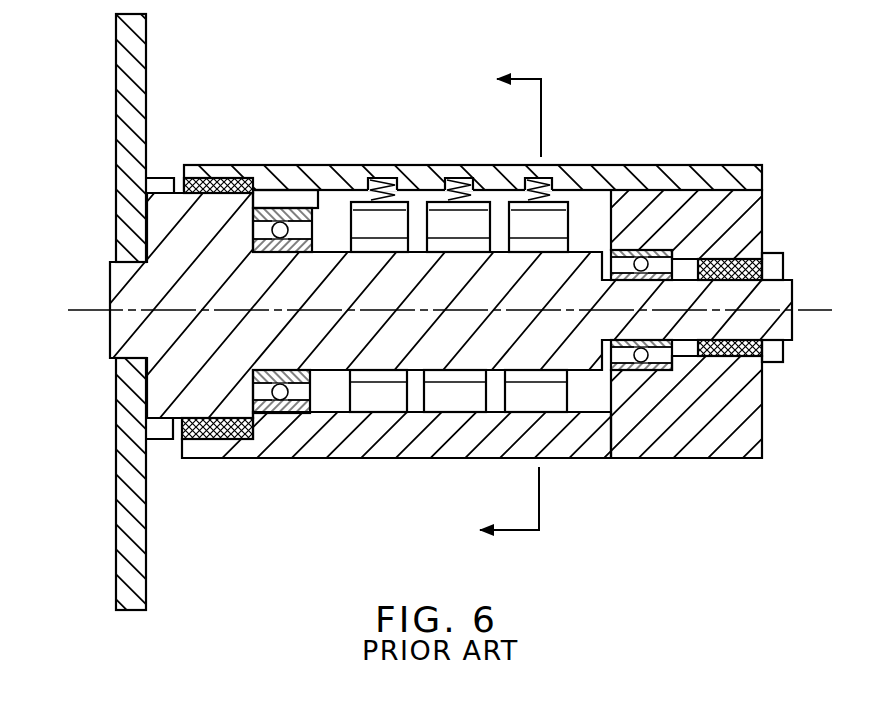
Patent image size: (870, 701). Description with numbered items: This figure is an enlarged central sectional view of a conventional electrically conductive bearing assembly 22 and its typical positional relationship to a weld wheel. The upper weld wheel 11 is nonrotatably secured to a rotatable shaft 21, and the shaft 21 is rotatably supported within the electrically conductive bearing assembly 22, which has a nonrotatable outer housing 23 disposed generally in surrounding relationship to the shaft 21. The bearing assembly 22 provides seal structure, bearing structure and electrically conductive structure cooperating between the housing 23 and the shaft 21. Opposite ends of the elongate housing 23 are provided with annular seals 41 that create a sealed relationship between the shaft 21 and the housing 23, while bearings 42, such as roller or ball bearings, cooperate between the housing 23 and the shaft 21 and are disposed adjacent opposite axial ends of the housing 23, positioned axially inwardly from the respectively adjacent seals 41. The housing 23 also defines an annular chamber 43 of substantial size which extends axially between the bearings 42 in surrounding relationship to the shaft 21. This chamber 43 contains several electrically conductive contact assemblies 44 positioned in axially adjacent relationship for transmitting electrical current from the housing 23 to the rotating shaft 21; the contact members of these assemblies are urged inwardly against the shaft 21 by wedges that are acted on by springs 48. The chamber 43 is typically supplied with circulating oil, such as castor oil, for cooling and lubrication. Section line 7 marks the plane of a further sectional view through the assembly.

The section line 7- 7 is at (522, 303).
The upper weld wheel 11 is at (142, 75).
The rotatable shaft 21 is at (112, 342).
The electrically conductive bearing assembly 22 is at (661, 165).
The outer housing 23 is at (733, 170).
The annular seals 41 is at (750, 259).
The bearings 42 is at (646, 259).
The annular chamber 43 is at (415, 202).
The electrically conductive contact assemblies 44 is at (577, 212).
The springs 48 is at (457, 185).